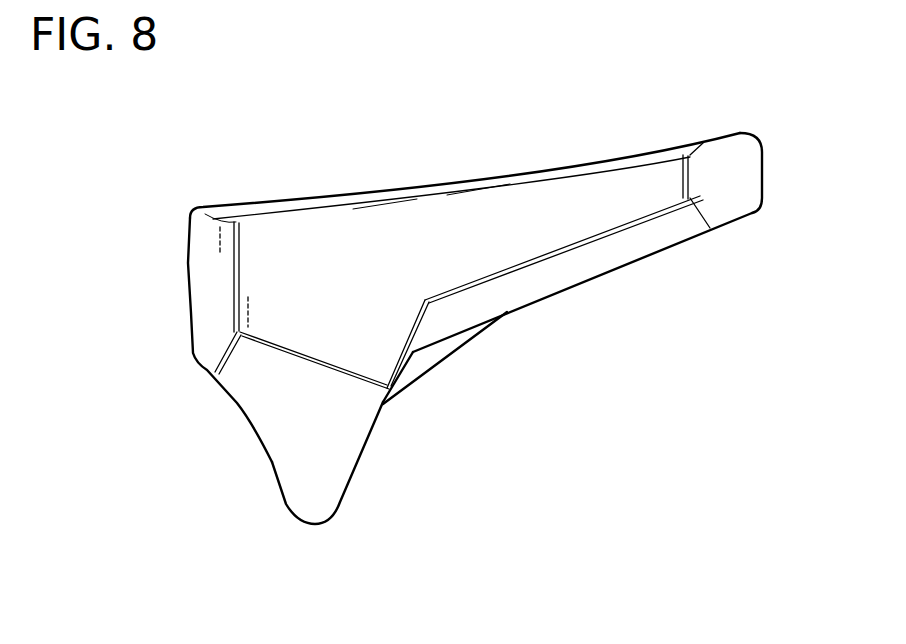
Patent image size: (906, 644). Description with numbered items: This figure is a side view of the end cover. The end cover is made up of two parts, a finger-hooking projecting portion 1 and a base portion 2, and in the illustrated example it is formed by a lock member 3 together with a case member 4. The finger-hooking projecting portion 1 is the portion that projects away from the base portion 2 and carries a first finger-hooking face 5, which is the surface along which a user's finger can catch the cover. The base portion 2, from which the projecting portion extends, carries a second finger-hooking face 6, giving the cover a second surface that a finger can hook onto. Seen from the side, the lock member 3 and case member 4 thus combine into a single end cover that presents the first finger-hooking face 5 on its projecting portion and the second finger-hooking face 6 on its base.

The finger-hooking projecting portion 1 is at (313, 497).
The base portion 2 is at (457, 175).
The lock member 3 is at (432, 372).
The case member 4 is at (733, 143).
The first finger-hooking face 5 is at (252, 420).
The second finger-hooking face 6 is at (348, 195).